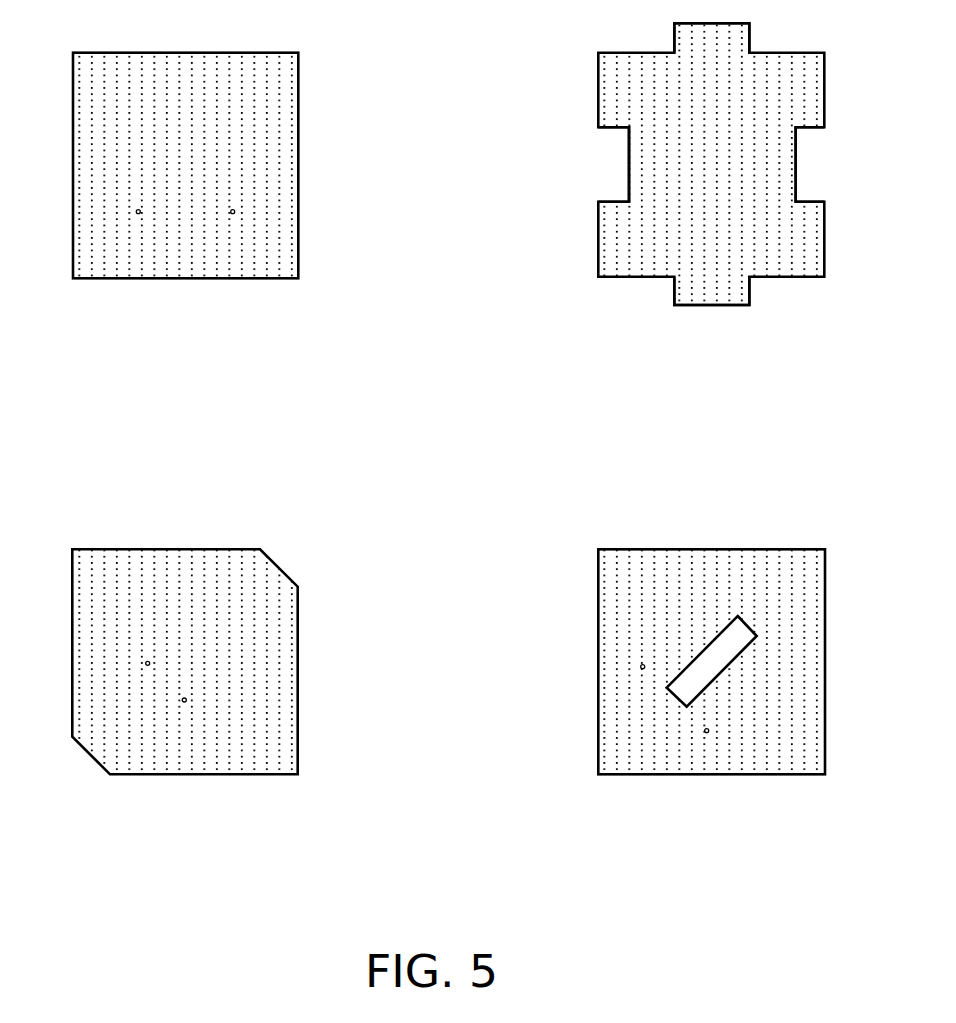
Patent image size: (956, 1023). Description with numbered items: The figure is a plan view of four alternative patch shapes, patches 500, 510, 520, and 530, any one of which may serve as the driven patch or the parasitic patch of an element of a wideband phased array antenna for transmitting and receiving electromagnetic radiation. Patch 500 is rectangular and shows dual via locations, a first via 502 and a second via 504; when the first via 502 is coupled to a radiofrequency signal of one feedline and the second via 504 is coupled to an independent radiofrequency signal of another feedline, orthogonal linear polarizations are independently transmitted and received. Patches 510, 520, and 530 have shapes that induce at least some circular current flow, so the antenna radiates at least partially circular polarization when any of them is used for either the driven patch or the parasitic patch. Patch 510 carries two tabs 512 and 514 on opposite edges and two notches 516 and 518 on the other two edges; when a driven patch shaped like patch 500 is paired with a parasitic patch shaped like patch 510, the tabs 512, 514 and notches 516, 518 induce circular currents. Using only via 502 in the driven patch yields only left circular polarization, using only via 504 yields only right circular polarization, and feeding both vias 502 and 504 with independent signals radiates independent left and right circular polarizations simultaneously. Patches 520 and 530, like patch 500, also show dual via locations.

The patch 500 is at (73, 53).
The first via 502 is at (138, 210).
The second via 504 is at (233, 210).
The patch 510 is at (598, 53).
The tab 512 is at (718, 23).
The tab 514 is at (717, 305).
The notch 516 is at (628, 183).
The notch 518 is at (797, 183).
The patch 520 is at (72, 549).
The patch 530 is at (598, 549).